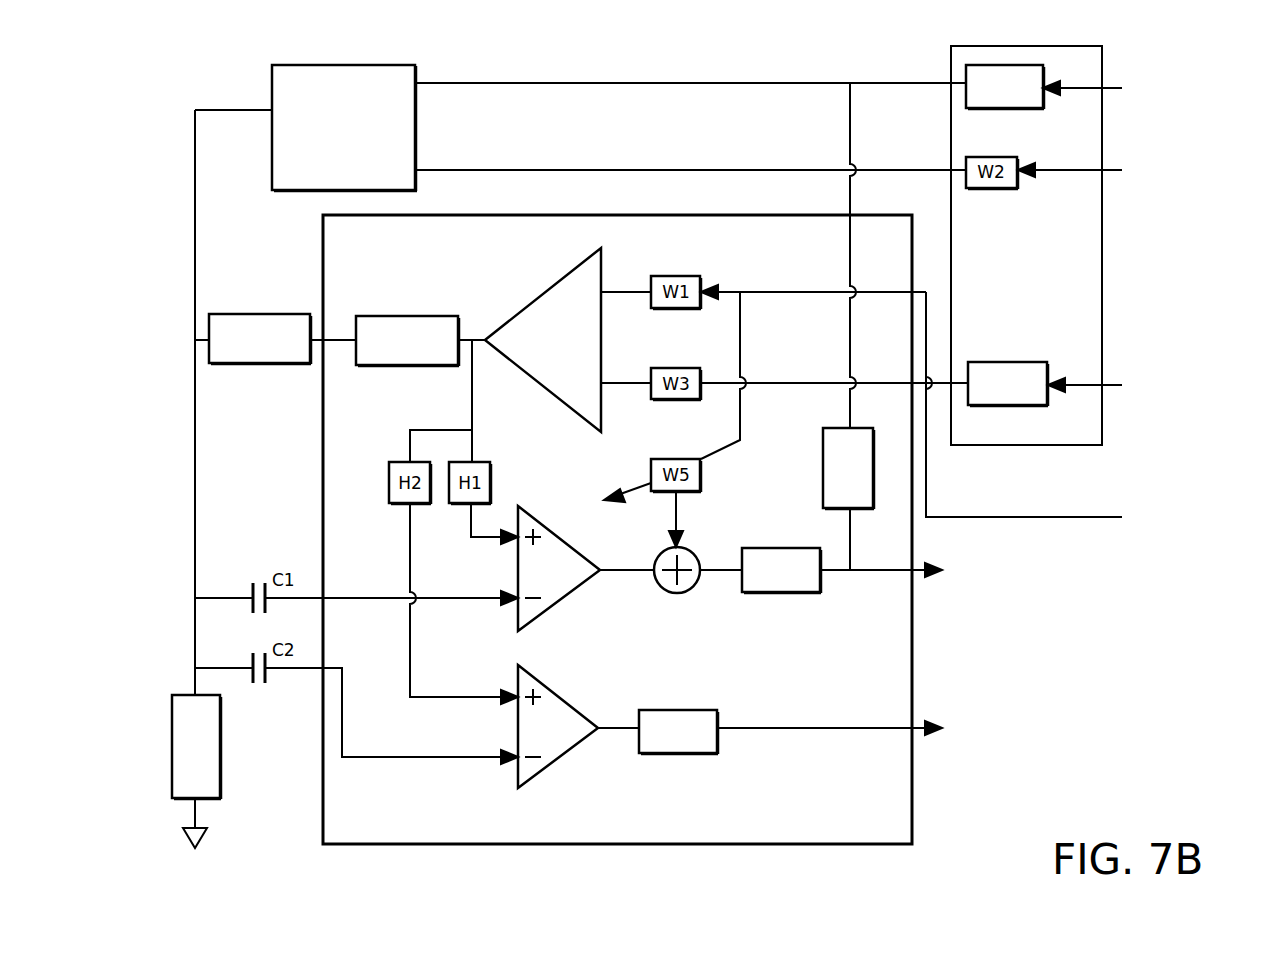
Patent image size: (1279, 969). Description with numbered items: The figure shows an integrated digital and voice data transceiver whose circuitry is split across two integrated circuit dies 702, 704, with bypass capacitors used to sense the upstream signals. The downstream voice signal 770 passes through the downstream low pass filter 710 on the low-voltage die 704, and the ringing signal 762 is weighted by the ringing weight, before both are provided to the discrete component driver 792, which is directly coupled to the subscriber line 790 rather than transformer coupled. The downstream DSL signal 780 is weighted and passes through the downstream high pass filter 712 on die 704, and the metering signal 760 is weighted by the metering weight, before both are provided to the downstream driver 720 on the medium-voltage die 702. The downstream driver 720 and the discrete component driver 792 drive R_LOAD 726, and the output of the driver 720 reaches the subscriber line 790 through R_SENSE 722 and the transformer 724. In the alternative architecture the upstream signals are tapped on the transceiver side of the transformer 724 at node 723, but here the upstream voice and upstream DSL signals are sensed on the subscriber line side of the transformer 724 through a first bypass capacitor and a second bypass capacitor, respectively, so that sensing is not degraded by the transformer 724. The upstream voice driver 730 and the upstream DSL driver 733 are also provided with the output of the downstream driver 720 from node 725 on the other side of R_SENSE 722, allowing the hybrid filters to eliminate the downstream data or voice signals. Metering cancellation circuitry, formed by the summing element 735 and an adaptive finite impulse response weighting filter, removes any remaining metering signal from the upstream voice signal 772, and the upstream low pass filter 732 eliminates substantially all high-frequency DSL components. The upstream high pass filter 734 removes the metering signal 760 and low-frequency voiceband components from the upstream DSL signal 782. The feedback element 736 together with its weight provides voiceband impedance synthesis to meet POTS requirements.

The integrated circuit die 702 is at (321, 261).
The integrated circuit die 704 is at (974, 446).
The downstream low pass filter 710 is at (1043, 72).
The downstream high pass filter 712 is at (1010, 357).
The downstream driver 720 is at (544, 292).
The R_SENSE 722 is at (416, 368).
The node 723 is at (335, 330).
The transformer 724 is at (270, 366).
The node 725 is at (468, 330).
The R_LOAD 726 is at (235, 771).
The upstream voice driver 730 is at (559, 568).
The upstream low pass filter 732 is at (786, 594).
The upstream DSL driver 733 is at (558, 726).
The upstream high pass filter 734 is at (672, 709).
The metering cancellation circuitry 735 is at (668, 593).
The feedback element 736 is at (848, 468).
The metering signal 760 is at (1094, 409).
The ringing signal 762 is at (1130, 171).
The downstream voice signal 770 is at (1132, 89).
The upstream voice signal 772 is at (930, 571).
The downstream DSL signal 780 is at (1125, 386).
The upstream DSL signal 782 is at (869, 729).
The subscriber line 790 is at (195, 446).
The discrete component driver 792 is at (344, 128).